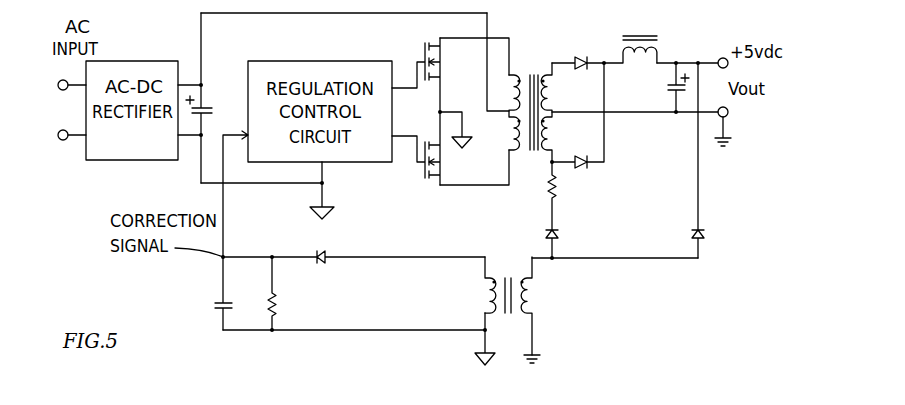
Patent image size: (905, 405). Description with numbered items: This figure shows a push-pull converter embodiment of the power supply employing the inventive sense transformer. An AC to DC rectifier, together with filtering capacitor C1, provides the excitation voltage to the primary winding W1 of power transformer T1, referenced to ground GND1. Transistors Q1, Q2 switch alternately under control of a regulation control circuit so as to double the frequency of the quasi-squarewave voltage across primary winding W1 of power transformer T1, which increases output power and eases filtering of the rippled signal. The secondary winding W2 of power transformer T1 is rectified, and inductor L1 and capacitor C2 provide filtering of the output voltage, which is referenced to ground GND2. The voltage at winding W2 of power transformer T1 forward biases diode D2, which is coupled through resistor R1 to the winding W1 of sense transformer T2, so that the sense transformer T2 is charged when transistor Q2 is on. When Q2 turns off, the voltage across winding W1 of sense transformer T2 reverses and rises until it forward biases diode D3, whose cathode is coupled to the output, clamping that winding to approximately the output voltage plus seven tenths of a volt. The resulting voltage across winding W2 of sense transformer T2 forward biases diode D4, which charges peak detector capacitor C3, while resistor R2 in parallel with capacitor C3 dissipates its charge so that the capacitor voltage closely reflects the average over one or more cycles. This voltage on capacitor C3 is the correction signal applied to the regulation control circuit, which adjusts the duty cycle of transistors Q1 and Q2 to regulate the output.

The filtering capacitor C1 is at (205, 98).
The transistor Q1 is at (428, 75).
The transistor Q2 is at (428, 148).
The power transformer T1 is at (536, 100).
The sense transformer T2 is at (509, 282).
The primary winding W1 is at (522, 215).
The secondary winding W2 is at (517, 188).
The inductor L1 is at (642, 48).
The capacitor C2 is at (668, 88).
The peak detector capacitor C3 is at (232, 293).
The resistor R1 is at (543, 196).
The resistor R2 is at (284, 293).
The diode D2 is at (565, 234).
The diode D3 is at (712, 160).
The diode D4 is at (401, 247).
The ground GND1 is at (410, 238).
The ground GND2 is at (649, 235).